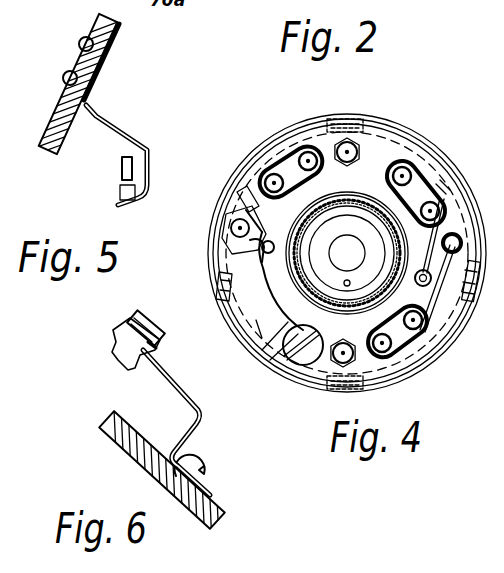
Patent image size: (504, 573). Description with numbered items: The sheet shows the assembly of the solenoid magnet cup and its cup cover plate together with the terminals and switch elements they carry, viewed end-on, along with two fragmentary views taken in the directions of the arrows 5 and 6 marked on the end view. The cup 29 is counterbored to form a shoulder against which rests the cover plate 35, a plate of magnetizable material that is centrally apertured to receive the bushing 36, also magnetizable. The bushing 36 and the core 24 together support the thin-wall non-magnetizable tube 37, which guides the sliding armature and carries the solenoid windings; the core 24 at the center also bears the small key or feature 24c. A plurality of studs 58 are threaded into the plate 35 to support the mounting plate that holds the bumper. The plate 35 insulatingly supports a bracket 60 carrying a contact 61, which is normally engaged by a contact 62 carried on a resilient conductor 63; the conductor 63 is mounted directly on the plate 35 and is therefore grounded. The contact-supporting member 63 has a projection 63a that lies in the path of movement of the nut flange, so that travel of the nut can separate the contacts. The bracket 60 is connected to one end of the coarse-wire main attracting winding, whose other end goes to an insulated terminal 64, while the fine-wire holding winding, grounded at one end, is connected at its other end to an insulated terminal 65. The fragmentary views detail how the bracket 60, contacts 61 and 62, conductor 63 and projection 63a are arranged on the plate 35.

In FIG. 4, the core 24 is at (347, 228).
In FIG. 4, the key of shaft 24c is at (349, 281).
In FIG. 4, the cup 29 is at (420, 370).
In FIG. 4, the cover plate 35 is at (398, 140).
In FIG. 5, the cover plate 35 is at (44, 152).
In FIG. 6, the cover plate 35 is at (123, 453).
In FIG. 4, the bushing 36 is at (328, 201).
In FIG. 4, the tube 37 is at (363, 201).
In FIG. 4, the studs 58 is at (357, 143).
In FIG. 4, the bracket 60 is at (286, 158).
In FIG. 5, the bracket 60 is at (111, 82).
In FIG. 6, the bracket 60 is at (144, 318).
In FIG. 4, the contact 61 is at (231, 228).
In FIG. 5, the contact 61 is at (123, 193).
In FIG. 6, the contact 61 is at (128, 324).
In FIG. 5, the contact 62 is at (124, 161).
In FIG. 6, the contact 62 is at (155, 346).
In FIG. 4, the resilient conductor 63 is at (258, 293).
In FIG. 5, the resilient conductor 63 is at (110, 202).
In FIG. 6, the resilient conductor 63 is at (170, 387).
In FIG. 4, the projection 63a is at (262, 257).
In FIG. 6, the projection 63a is at (207, 470).
In FIG. 4, the insulated terminal 64 is at (432, 340).
In FIG. 4, the insulated terminal 65 is at (441, 181).
In FIG. 4, the arrow 5 is at (225, 154).
In FIG. 4, the arrow 6 is at (247, 364).